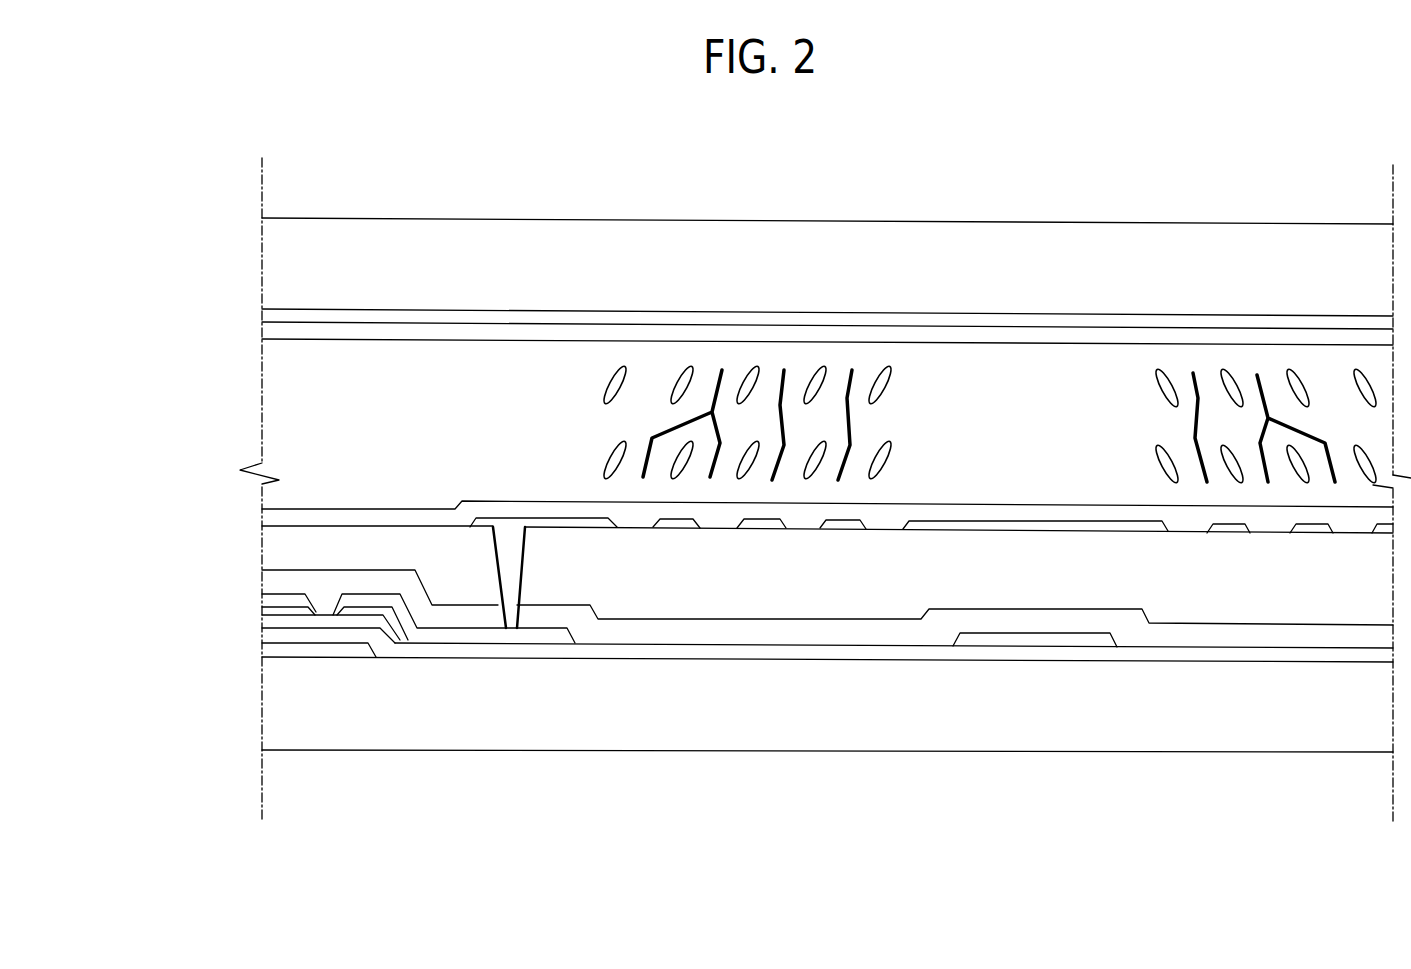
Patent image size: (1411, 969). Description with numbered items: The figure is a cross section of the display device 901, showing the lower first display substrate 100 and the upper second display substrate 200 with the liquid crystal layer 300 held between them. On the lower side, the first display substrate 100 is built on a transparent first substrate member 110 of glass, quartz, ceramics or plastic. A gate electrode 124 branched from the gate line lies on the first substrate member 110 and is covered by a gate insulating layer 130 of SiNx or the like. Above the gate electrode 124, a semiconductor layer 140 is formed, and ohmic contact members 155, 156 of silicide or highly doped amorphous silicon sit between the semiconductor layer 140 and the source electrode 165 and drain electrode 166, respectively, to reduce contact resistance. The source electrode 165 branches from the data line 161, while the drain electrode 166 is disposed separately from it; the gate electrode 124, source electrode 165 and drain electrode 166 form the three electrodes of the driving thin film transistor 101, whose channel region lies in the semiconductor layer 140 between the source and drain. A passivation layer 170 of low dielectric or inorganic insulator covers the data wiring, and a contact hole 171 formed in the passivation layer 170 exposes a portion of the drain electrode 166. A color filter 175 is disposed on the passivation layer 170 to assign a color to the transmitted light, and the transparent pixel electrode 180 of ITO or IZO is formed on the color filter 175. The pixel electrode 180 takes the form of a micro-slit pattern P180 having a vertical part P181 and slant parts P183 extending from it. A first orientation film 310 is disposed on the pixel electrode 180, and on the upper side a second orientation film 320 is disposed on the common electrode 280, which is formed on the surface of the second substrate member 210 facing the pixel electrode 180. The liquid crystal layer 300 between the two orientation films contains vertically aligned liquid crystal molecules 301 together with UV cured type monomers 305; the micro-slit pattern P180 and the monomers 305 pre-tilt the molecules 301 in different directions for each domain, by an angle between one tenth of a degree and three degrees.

The display device 901 is at (843, 116).
The second display substrate 200 is at (341, 191).
The second substrate member 210 is at (443, 238).
The common electrode 280 is at (634, 316).
The second orientation film 320 is at (262, 331).
The liquid crystal layer 300 is at (245, 426).
The liquid crystal molecules 301 is at (878, 368).
The UV cured type monomers 305 is at (783, 369).
The first orientation film 310 is at (262, 518).
The pixel electrode 180 is at (1097, 545).
The slant part P183 is at (678, 527).
The vertical part P181 is at (922, 525).
The micro-slit pattern P180 is at (856, 853).
The contact hole 171 is at (508, 572).
The color filter 175 is at (667, 604).
The ohmic contact member 156 is at (383, 612).
The passivation layer 170 is at (625, 630).
The source electrode 165 is at (286, 603).
The drain electrode 166 is at (437, 637).
The ohmic contact member 155 is at (300, 613).
The semiconductor layer 140 is at (345, 623).
The gate insulating layer 130 is at (570, 652).
The gate electrode 124 is at (333, 647).
The data line 161 is at (1030, 640).
The first substrate member 110 is at (1228, 732).
The first display substrate 100 is at (1334, 772).
The driving thin film transistor 101 is at (493, 853).